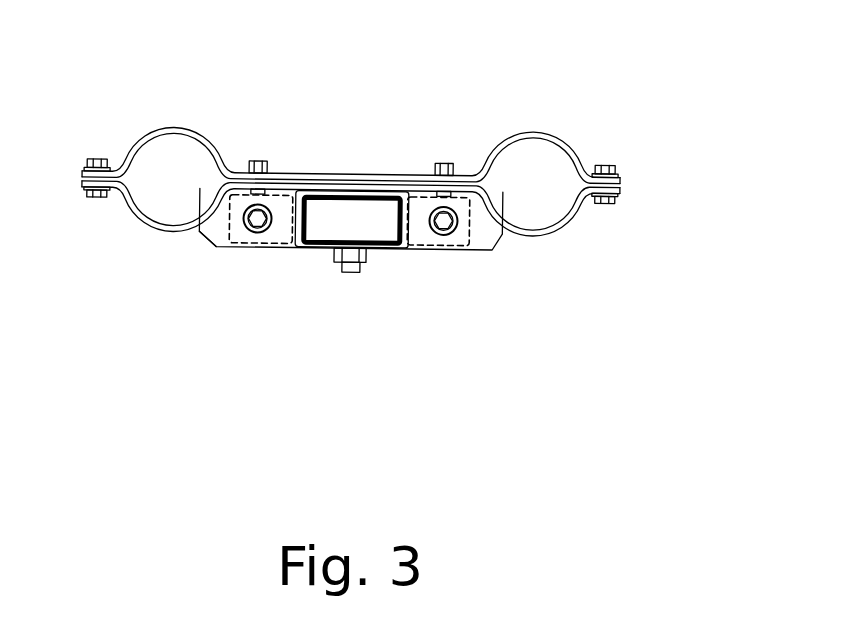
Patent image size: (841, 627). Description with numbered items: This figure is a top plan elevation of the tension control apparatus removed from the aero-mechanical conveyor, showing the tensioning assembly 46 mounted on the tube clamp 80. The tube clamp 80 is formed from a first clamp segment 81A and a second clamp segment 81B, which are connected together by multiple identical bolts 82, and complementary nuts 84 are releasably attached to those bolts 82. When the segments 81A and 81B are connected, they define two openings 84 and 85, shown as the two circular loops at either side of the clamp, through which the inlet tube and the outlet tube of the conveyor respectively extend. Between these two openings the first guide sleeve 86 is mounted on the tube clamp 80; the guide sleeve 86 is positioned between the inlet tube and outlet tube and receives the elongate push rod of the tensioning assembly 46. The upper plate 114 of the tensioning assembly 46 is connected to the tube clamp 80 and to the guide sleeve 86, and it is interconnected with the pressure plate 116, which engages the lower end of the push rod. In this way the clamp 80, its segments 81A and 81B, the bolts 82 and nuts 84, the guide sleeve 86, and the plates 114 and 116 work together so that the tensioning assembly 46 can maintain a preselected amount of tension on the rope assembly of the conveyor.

The tube clamp 80 is at (412, 226).
The first clamp segment 81A is at (622, 194).
The second clamp segment 81B is at (622, 178).
The bolt 82 is at (273, 198).
The nut 84 is at (92, 160).
The opening 85 is at (160, 136).
The first guide sleeve 86 is at (378, 250).
The upper plate 114 is at (500, 250).
The pressure plate 116 is at (212, 257).
The tensioning assembly 46 is at (458, 266).